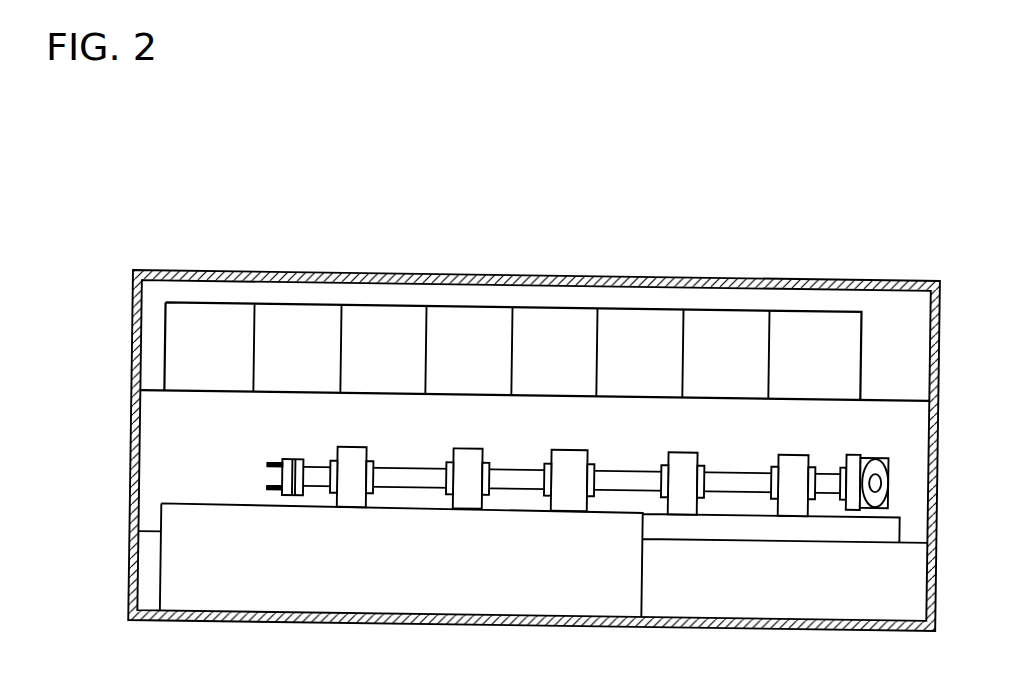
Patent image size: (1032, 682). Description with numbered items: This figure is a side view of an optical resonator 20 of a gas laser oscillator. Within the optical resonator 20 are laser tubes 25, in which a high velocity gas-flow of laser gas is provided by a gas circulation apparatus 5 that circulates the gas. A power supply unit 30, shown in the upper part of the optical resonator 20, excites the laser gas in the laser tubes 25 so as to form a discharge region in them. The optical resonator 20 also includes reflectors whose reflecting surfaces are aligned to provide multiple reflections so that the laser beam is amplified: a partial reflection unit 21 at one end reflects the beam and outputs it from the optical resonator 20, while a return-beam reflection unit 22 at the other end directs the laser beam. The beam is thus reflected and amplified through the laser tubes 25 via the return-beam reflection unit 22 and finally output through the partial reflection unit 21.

The optical resonator 20 is at (941, 418).
The power supply unit 30 is at (660, 302).
The gas circulation apparatus 5 is at (630, 580).
The partial reflection unit 21 is at (292, 458).
The laser tubes 25 is at (727, 474).
The return-beam reflection unit 22 is at (876, 458).